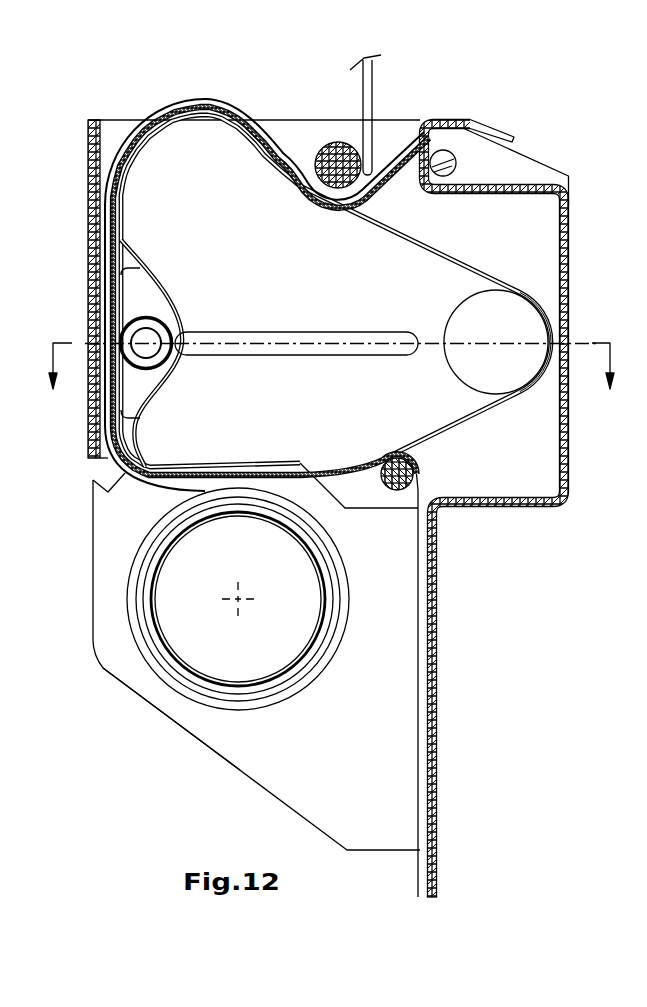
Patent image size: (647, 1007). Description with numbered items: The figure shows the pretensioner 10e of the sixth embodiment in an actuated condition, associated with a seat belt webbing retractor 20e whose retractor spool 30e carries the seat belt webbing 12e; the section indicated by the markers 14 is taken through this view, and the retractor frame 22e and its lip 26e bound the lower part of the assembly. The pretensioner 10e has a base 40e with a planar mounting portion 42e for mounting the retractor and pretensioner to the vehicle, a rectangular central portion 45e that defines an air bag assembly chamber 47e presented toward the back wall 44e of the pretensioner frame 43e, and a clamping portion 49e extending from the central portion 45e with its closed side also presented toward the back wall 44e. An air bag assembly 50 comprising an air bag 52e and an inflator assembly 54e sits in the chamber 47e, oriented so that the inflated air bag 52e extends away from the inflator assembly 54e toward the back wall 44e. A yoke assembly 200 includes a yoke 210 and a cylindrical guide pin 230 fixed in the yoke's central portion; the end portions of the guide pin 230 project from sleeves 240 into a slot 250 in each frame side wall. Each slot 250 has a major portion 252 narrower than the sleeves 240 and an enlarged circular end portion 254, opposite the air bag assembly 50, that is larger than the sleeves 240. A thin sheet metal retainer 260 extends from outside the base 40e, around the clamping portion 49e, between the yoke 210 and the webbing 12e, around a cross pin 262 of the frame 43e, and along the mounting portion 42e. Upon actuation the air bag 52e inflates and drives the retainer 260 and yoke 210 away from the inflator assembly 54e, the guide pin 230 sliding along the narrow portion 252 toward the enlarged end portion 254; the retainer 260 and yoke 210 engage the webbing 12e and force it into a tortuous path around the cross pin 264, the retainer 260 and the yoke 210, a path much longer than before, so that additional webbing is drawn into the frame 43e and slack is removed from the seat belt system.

The pretensioner 10e is at (171, 92).
The seat belt webbing 12e is at (378, 80).
The section line 14 is at (333, 382).
The seat belt webbing retractor 20e is at (112, 706).
The housing side wall 22e is at (100, 680).
The housing lip 26e is at (112, 512).
The retractor spool 30e is at (205, 722).
The base 40e is at (530, 505).
The planar mounting portion 42e is at (438, 723).
The pretensioner frame 43e is at (104, 113).
The back wall 44e is at (88, 252).
The rectangular central portion 45e is at (517, 510).
The air bag assembly chamber 47e is at (545, 462).
The clamping portion 49e is at (457, 131).
The air bag assembly 50 is at (556, 315).
The air bag 52e is at (480, 258).
The inflator assembly 54e is at (520, 324).
The yoke assembly 200 is at (146, 262).
The yoke 210 is at (134, 290).
The cylindrical guide pin 230 is at (156, 352).
The sleeves 240 is at (146, 369).
The slot 250 is at (360, 323).
The major portion 252 is at (307, 342).
The enlarged circular end portion 254 is at (163, 322).
The retainer 260 is at (428, 485).
The cross pin 262 is at (390, 481).
The cross-pin 264 is at (338, 162).